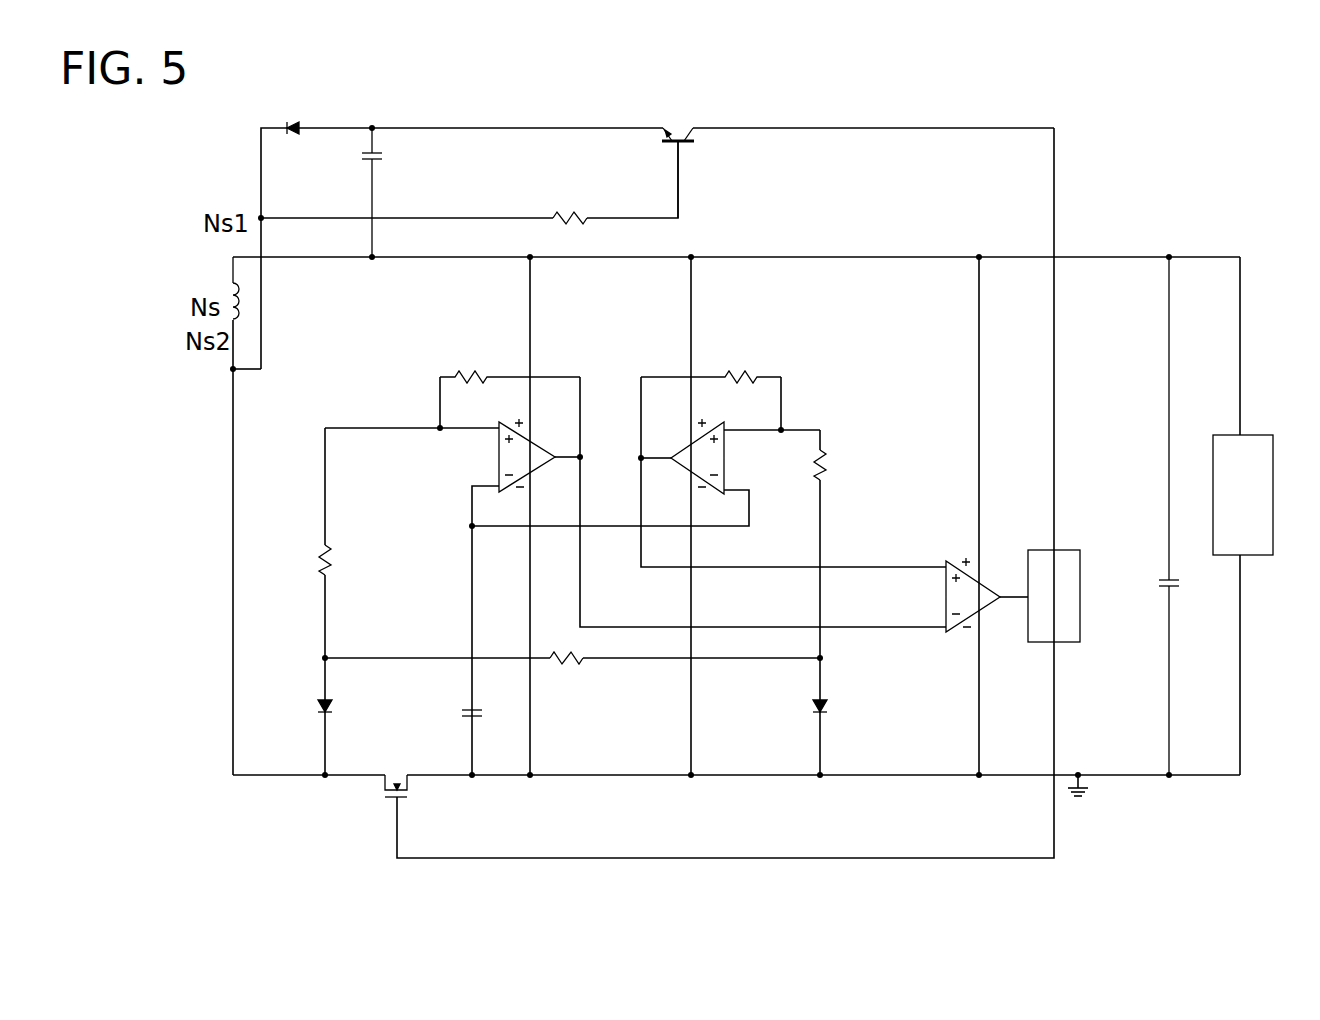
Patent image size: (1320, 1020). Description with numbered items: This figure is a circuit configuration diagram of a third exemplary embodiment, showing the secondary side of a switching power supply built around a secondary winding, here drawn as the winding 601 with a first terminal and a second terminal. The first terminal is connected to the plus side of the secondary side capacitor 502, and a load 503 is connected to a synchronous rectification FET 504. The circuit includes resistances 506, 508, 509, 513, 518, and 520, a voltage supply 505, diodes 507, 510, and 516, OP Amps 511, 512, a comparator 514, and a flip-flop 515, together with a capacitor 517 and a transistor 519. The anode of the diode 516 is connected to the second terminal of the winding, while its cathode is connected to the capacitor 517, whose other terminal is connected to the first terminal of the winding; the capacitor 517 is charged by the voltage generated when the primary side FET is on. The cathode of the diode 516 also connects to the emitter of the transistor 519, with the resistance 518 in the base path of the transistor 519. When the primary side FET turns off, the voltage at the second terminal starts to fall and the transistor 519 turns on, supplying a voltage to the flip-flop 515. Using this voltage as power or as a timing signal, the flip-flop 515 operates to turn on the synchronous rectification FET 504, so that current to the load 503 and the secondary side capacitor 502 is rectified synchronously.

The secondary winding 601 is at (228, 283).
The diode 516 is at (295, 136).
The capacitor 517 is at (385, 158).
The resistance 518 is at (560, 212).
The transistor 519 is at (686, 145).
The resistance 508 is at (468, 372).
The resistance 509 is at (744, 372).
The OP Amp 511 is at (498, 457).
The OP Amp 512 is at (726, 458).
The resistance 513 is at (828, 466).
The resistance 506 is at (333, 560).
The resistance 520 is at (568, 664).
The diode 507 is at (318, 704).
The diode 510 is at (830, 706).
The voltage supply 505 is at (461, 712).
The synchronous rectification FET 504 is at (410, 797).
The comparator 514 is at (946, 562).
The flip-flop 515 is at (1040, 550).
The secondary side capacitor 502 is at (1178, 584).
The load 503 is at (1248, 435).